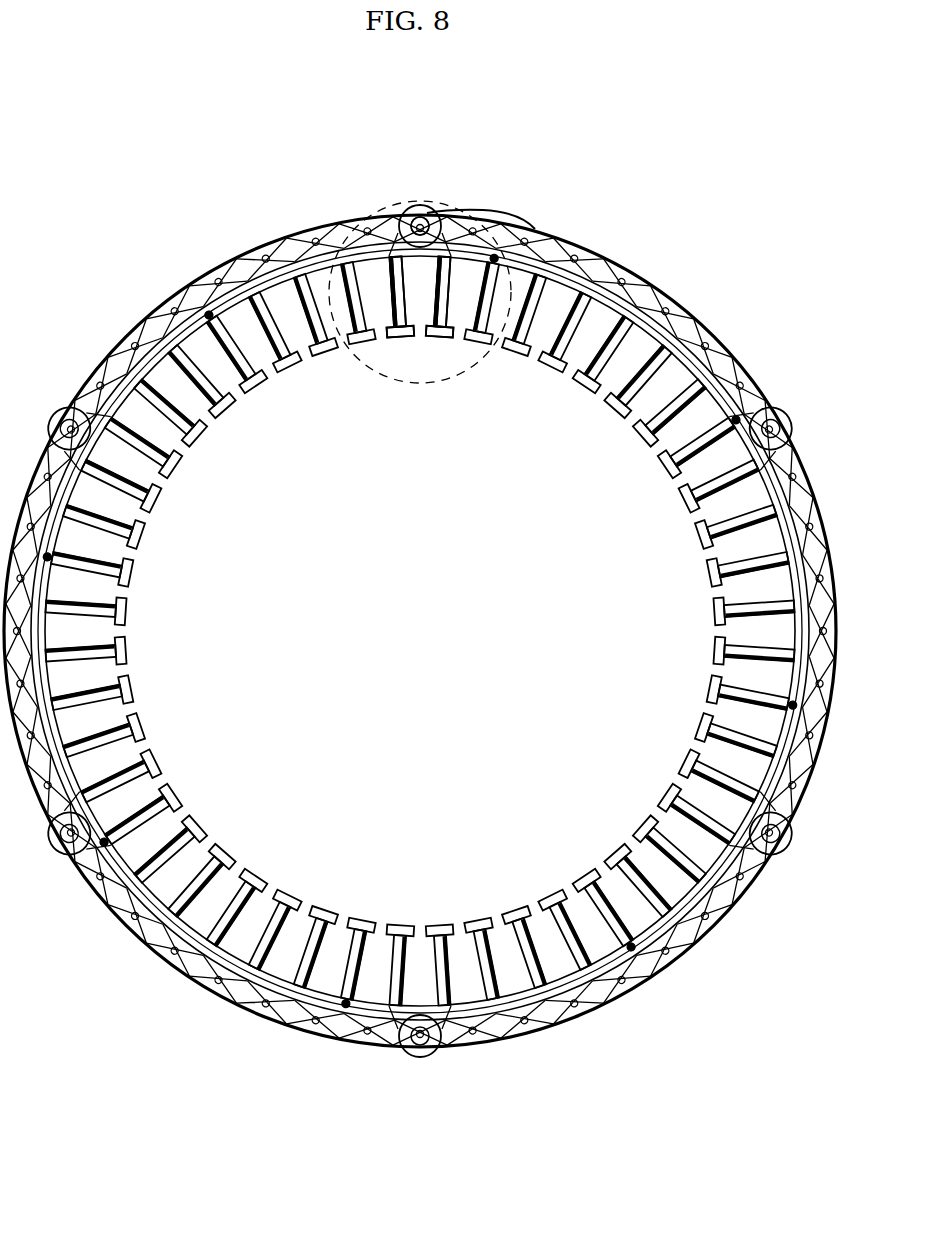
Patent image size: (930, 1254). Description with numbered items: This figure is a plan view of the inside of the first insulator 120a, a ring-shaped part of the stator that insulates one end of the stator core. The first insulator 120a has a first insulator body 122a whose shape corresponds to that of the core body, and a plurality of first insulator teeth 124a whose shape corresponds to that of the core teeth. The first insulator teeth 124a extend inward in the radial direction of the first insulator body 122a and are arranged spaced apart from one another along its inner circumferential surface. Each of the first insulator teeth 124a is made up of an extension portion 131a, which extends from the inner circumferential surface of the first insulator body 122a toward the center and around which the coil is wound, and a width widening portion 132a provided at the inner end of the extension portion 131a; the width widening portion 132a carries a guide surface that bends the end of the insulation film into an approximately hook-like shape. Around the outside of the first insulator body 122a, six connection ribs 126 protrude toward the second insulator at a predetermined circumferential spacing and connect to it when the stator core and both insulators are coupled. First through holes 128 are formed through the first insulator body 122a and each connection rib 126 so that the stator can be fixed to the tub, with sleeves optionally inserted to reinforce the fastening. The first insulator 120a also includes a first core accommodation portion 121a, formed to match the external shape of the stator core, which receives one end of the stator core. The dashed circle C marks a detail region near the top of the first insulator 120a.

The first insulator 120a is at (429, 70).
The first core accommodation portion 121a is at (240, 258).
The first insulator body 122a is at (370, 222).
The first insulator teeth 124a is at (395, 342).
The connection ribs 126 is at (411, 204).
The first through holes 128 is at (422, 220).
The extension portion 131a is at (490, 233).
The width widening portion 132a is at (445, 272).
The enlarged region C is at (443, 201).